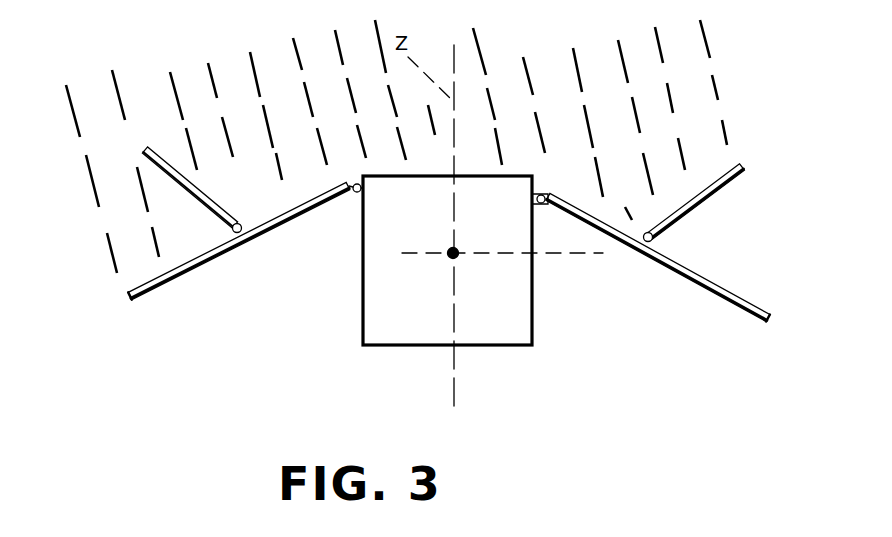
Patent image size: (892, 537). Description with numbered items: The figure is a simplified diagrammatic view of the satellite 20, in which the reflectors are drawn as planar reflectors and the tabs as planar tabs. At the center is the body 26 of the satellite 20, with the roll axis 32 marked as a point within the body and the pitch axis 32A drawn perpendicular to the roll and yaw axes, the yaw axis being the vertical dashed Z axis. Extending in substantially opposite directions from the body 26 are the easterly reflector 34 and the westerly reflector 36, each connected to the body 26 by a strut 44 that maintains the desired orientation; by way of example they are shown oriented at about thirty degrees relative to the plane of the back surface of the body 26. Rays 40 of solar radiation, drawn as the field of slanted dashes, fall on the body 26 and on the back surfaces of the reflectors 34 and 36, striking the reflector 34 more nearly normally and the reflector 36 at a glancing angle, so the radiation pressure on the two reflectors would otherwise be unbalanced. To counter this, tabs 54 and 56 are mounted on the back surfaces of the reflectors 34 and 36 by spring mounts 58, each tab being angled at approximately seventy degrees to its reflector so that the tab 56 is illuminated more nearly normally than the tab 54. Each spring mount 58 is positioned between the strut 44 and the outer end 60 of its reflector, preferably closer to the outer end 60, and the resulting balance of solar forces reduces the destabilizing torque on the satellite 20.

The satellite 20 is at (320, 273).
The body 26 is at (360, 315).
The roll axis 32 is at (450, 255).
The pitch axis 32A is at (570, 253).
The reflector 34 is at (178, 277).
The reflector 36 is at (698, 282).
The rays 40 is at (708, 43).
The struts 44 is at (333, 197).
The tab 54 is at (166, 156).
The tab 56 is at (742, 165).
The spring mounts 58 is at (239, 222).
The outer end 60 is at (128, 300).